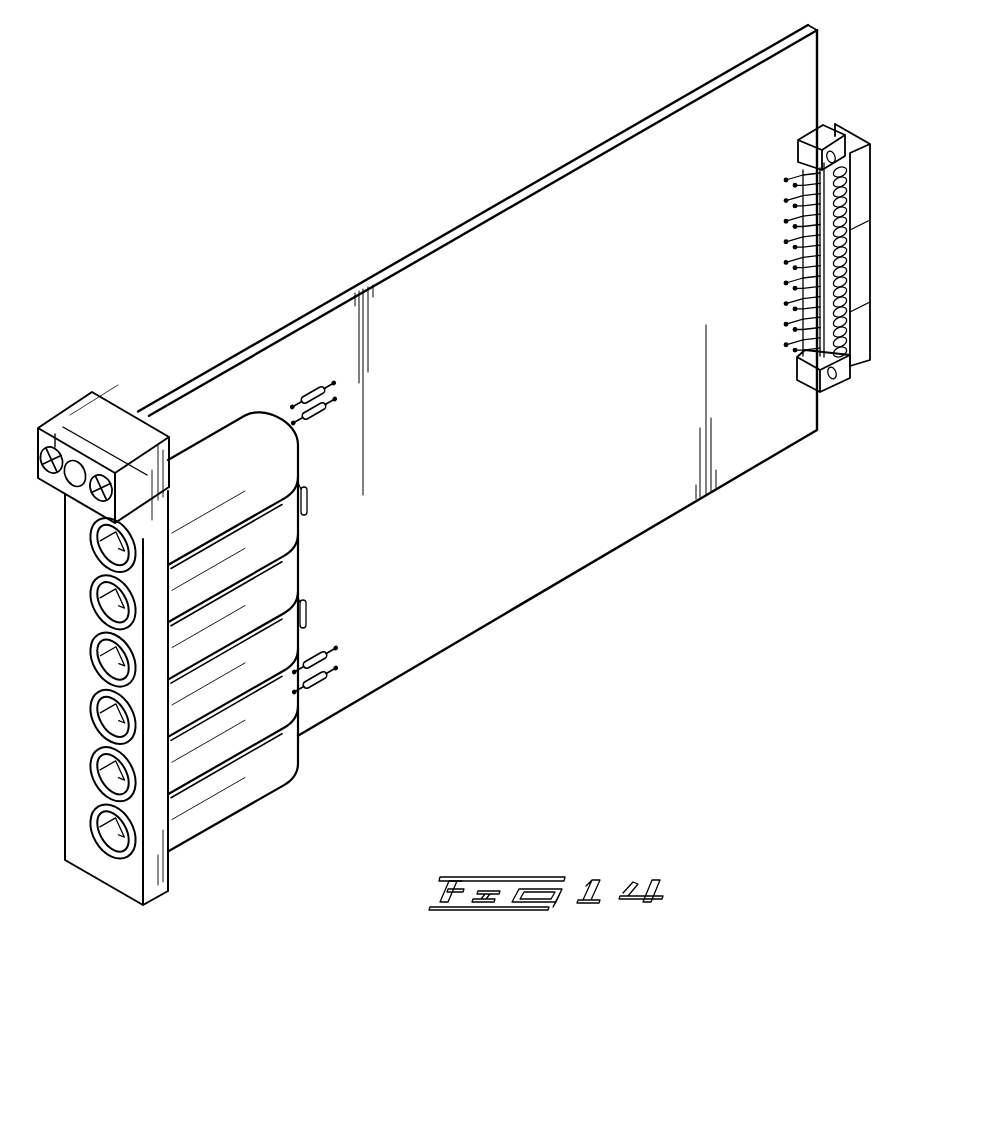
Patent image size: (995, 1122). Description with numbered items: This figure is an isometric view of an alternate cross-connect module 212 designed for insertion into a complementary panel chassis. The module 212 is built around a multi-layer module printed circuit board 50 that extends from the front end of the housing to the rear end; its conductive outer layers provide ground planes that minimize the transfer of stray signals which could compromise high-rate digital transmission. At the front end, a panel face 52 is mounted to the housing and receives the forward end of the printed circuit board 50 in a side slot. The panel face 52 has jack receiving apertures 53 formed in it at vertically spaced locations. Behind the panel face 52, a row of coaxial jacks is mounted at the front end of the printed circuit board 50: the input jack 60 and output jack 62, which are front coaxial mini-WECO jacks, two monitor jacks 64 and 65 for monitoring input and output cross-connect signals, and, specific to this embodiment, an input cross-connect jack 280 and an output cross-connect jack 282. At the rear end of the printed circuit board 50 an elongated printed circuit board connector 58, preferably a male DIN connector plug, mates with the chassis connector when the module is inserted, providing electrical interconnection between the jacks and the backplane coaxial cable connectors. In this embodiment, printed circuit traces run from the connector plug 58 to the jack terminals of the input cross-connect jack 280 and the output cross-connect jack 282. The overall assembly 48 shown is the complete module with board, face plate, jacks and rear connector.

The circuit card assembly 48 is at (382, 183).
The module 212 is at (233, 316).
The printed circuit board connector 58 is at (856, 140).
The module printed circuit board 50 is at (534, 414).
The monitor jack 64 is at (262, 470).
The input cross-connect jack 280 is at (270, 527).
The input jack 60 is at (273, 585).
The output jack 62 is at (297, 650).
The output cross-connect jack 282 is at (292, 722).
The monitor jack 65 is at (257, 773).
The jack receiving apertures 53 is at (90, 650).
The panel face 52 is at (130, 878).